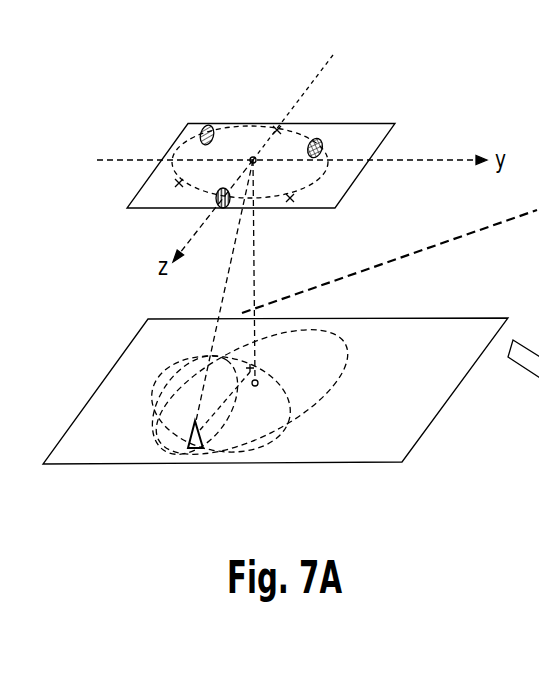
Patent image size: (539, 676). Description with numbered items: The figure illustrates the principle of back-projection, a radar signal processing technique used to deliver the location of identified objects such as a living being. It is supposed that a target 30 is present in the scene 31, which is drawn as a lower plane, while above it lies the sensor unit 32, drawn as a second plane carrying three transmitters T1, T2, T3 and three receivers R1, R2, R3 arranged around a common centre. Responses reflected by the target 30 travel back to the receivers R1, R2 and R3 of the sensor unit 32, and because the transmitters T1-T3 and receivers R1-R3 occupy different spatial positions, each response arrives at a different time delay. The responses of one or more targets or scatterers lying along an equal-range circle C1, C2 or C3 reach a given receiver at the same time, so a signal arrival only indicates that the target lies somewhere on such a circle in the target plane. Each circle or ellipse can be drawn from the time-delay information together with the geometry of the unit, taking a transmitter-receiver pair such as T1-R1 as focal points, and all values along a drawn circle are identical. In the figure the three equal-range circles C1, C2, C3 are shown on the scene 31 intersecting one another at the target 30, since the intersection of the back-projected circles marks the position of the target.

The target 30 is at (198, 448).
The scene 31 is at (440, 413).
The sensor unit 32 is at (368, 124).
The receiver R1 is at (206, 119).
The receiver R2 is at (223, 215).
The receiver R3 is at (331, 146).
The transmitter T1 is at (166, 188).
The transmitter T2 is at (273, 113).
The transmitter T3 is at (293, 218).
The equal-range circle C1 is at (206, 343).
The equal-range circle C2 is at (332, 384).
The equal-range circle C3 is at (155, 402).